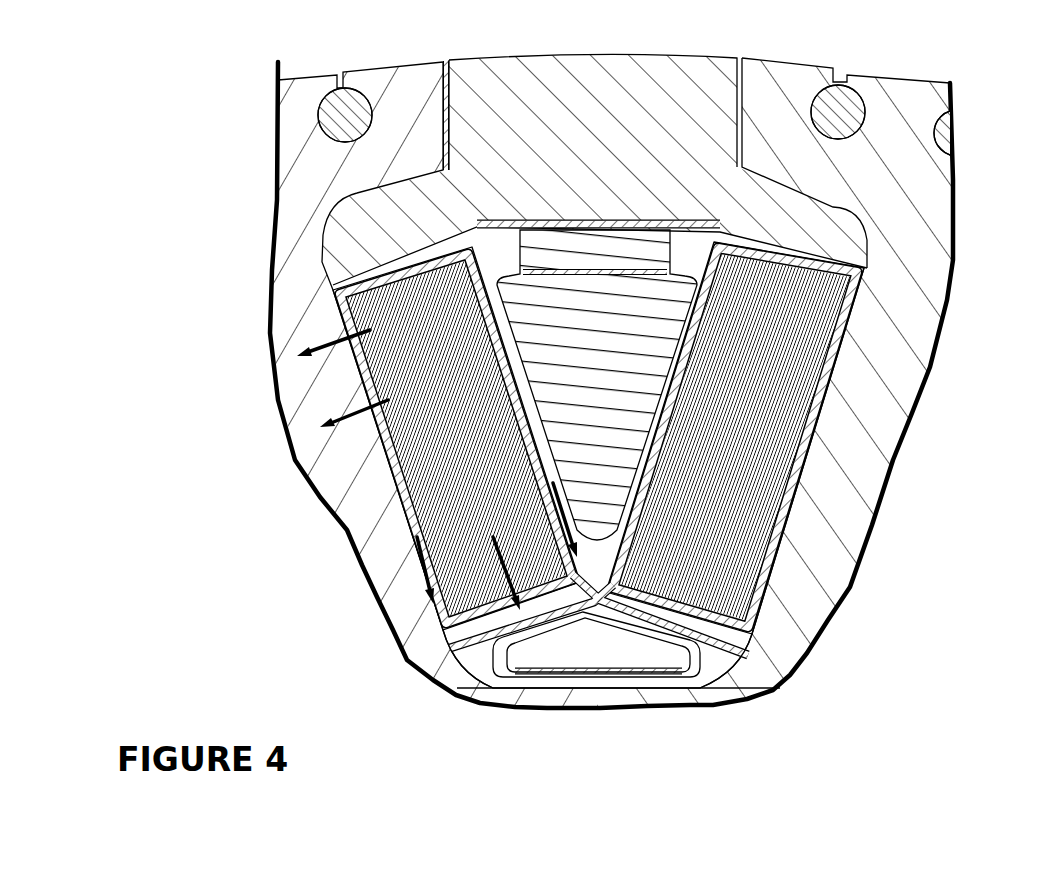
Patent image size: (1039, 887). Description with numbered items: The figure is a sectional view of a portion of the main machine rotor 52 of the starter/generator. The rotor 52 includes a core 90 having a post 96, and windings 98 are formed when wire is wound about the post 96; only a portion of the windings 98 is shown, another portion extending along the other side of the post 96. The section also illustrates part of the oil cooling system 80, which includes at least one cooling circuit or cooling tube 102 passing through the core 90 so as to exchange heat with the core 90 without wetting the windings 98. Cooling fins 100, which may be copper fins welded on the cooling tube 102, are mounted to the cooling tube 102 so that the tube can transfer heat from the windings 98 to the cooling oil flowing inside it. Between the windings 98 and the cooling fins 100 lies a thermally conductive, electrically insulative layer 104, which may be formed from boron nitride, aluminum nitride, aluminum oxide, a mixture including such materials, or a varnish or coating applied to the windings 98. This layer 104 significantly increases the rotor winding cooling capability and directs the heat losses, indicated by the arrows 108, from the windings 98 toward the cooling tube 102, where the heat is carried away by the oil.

The main machine rotor 52 is at (595, 30).
The oil cooling system 80 is at (585, 678).
The core 90 is at (881, 144).
The post 96 is at (300, 410).
The windings 98 is at (392, 482).
The cooling fins 100 is at (823, 627).
The cooling tube 102 is at (673, 673).
The thermally conductive, electrically insulative layer 104 is at (707, 222).
The arrows 108 is at (425, 627).